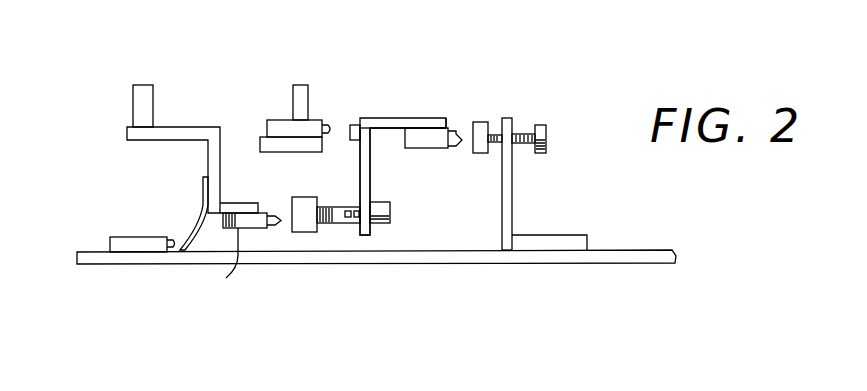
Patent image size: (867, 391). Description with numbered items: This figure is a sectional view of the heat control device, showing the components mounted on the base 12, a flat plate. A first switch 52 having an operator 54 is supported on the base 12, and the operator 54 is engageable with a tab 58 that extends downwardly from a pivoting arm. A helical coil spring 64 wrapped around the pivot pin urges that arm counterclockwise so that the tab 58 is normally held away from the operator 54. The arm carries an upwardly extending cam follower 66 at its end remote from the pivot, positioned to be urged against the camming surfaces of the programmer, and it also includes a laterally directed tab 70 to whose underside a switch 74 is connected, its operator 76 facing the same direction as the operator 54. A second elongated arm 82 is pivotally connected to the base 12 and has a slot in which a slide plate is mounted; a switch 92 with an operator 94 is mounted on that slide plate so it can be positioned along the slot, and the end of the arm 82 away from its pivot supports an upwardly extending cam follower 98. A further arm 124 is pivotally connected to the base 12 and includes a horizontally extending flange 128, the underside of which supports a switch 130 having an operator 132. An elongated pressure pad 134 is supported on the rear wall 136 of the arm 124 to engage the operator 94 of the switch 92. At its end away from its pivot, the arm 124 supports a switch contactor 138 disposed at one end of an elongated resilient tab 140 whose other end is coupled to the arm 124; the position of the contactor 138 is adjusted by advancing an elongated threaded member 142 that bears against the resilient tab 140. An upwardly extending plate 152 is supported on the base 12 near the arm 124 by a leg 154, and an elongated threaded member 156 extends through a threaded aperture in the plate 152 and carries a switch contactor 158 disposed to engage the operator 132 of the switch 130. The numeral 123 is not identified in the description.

The base 12 is at (95, 266).
The first switch 52 is at (144, 237).
The switch operator 54 is at (168, 237).
The tab 58 is at (193, 212).
The helical coil spring 64 is at (205, 128).
The cam follower 66 is at (148, 92).
The laterally directed tab 70 is at (232, 184).
The switch 74 is at (214, 263).
The operator 76 is at (275, 222).
The arm 82 is at (290, 148).
The switch 92 is at (281, 123).
The operator 94 is at (327, 125).
The cam follower 98 is at (312, 57).
The end wall 123 is at (437, 120).
The arm 124 is at (412, 122).
The horizontally extending flange 128 is at (405, 118).
The switch 130 is at (440, 150).
The operator 132 is at (452, 147).
The pressure pad 134 is at (356, 122).
The rear wall 136 is at (360, 170).
The switch contactor 138 is at (307, 225).
The resilient tab 140 is at (338, 222).
The elongated threaded member 142 is at (390, 212).
The plate 152 is at (506, 207).
The leg 154 is at (578, 243).
The elongated threaded member 156 is at (520, 150).
The switch contactor 158 is at (482, 125).